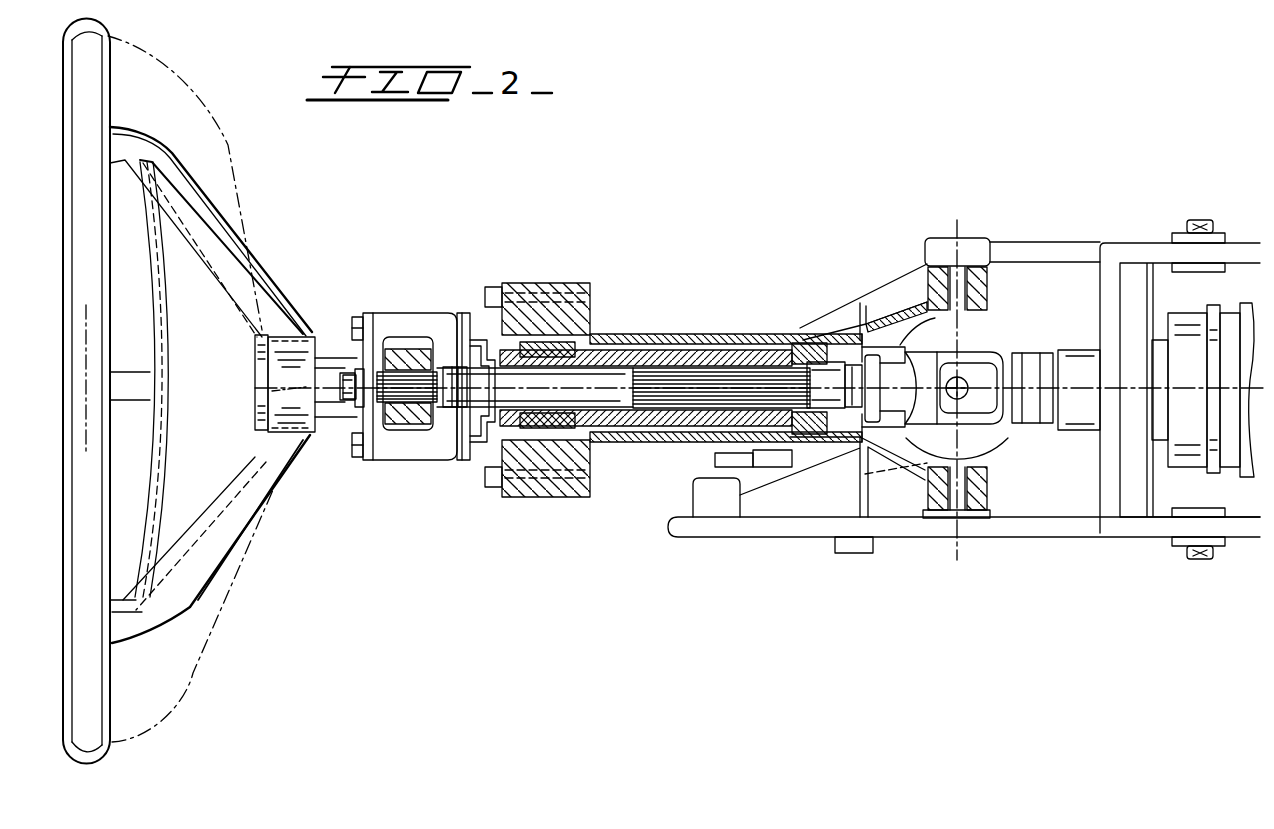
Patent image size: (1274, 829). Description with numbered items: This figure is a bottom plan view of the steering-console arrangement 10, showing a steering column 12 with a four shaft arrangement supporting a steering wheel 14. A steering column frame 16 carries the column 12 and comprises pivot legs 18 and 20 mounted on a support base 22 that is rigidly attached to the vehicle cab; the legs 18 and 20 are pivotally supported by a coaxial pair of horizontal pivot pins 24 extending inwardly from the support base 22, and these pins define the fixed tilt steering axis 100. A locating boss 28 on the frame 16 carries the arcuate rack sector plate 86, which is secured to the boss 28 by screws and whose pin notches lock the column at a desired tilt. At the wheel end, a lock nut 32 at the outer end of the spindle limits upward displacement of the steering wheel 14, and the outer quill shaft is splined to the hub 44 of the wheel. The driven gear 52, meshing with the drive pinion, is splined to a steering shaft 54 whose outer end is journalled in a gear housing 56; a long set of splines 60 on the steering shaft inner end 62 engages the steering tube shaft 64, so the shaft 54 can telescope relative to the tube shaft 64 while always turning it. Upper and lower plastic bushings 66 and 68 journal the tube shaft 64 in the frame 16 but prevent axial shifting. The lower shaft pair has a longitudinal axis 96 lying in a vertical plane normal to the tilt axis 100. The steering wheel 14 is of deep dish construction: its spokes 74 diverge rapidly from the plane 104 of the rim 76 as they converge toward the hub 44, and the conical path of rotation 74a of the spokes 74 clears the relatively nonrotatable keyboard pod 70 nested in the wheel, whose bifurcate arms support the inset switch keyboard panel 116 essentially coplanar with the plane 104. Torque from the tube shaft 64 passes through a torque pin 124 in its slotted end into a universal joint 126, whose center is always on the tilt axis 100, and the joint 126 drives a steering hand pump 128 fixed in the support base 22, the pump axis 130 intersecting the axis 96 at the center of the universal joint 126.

The steering-console arrangement 10 is at (1088, 207).
The steering column 12 is at (332, 430).
The steering wheel 14 is at (246, 524).
The steering column frame 16 is at (748, 335).
The pivot leg 18 is at (883, 485).
The pivot leg 20 is at (890, 277).
The support base 22 is at (1073, 532).
The pivot pins 24 is at (987, 292).
The locating boss 28 is at (752, 457).
The lock nut 32 is at (257, 337).
The hub 44 is at (307, 362).
The driven gear 52 is at (417, 340).
The steering shaft 54 is at (487, 393).
The gear housing 56 is at (367, 313).
The splines 60 is at (664, 370).
The steering shaft inner end 62 is at (820, 370).
The steering tube shaft 64 is at (608, 420).
The upper plastic bushing 66 is at (543, 428).
The lower plastic bushing 68 is at (807, 434).
The keyboard pod 70 is at (190, 176).
The spokes 74 is at (227, 244).
The conical path of rotation of the spokes 74a is at (204, 137).
The steering wheel rim 76 is at (96, 108).
The arcuate rack sector plate 86 is at (715, 460).
The longitudinal axis 96 is at (270, 391).
The fixed tilt steering axis 100 is at (962, 545).
The plane of the rim 104 is at (106, 321).
The switch keyboard panel 116 is at (150, 468).
The torque pin 124 is at (883, 368).
The universal joint 126 is at (973, 348).
The steering hand pump 128 is at (1183, 312).
The pump axis 130 is at (1230, 366).